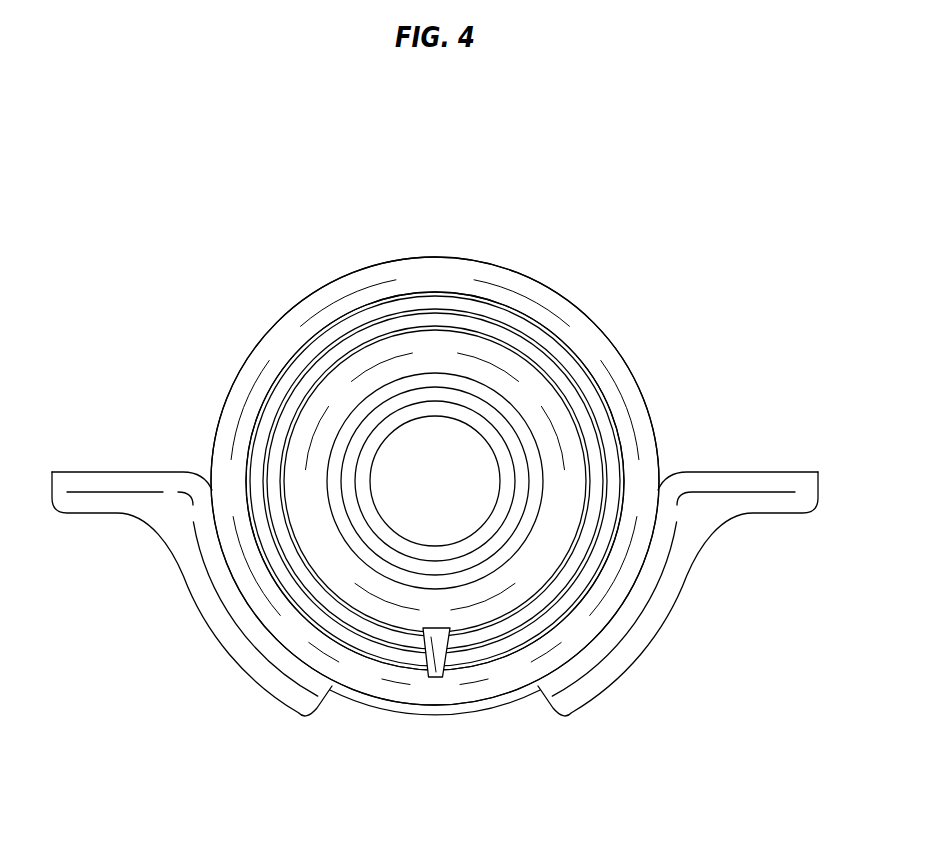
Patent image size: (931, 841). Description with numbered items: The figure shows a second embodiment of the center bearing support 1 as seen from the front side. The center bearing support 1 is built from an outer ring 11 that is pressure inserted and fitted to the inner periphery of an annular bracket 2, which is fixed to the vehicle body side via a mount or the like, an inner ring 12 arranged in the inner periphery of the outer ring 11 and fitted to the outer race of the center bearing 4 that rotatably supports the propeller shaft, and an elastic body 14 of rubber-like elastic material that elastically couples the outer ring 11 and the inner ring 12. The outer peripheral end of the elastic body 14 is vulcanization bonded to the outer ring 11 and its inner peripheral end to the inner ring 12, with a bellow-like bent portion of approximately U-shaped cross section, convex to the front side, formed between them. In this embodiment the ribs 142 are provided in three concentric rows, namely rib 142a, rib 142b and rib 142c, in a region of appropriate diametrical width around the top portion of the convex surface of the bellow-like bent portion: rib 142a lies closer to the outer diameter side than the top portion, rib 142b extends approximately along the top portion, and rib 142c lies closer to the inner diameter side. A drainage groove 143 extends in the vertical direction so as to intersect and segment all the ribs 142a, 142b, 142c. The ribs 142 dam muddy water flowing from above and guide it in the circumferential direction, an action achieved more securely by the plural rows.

The center bearing support 1 is at (274, 295).
The annular bracket 2 is at (224, 658).
The center bearing 4 is at (352, 456).
The outer ring 11 is at (574, 303).
The inner ring 12 is at (522, 455).
The elastic body 14 is at (242, 445).
The ribs 142 is at (435, 406).
The rib 142a is at (362, 307).
The rib 142b is at (427, 311).
The rib 142c is at (336, 188).
The drainage groove 143 is at (443, 660).